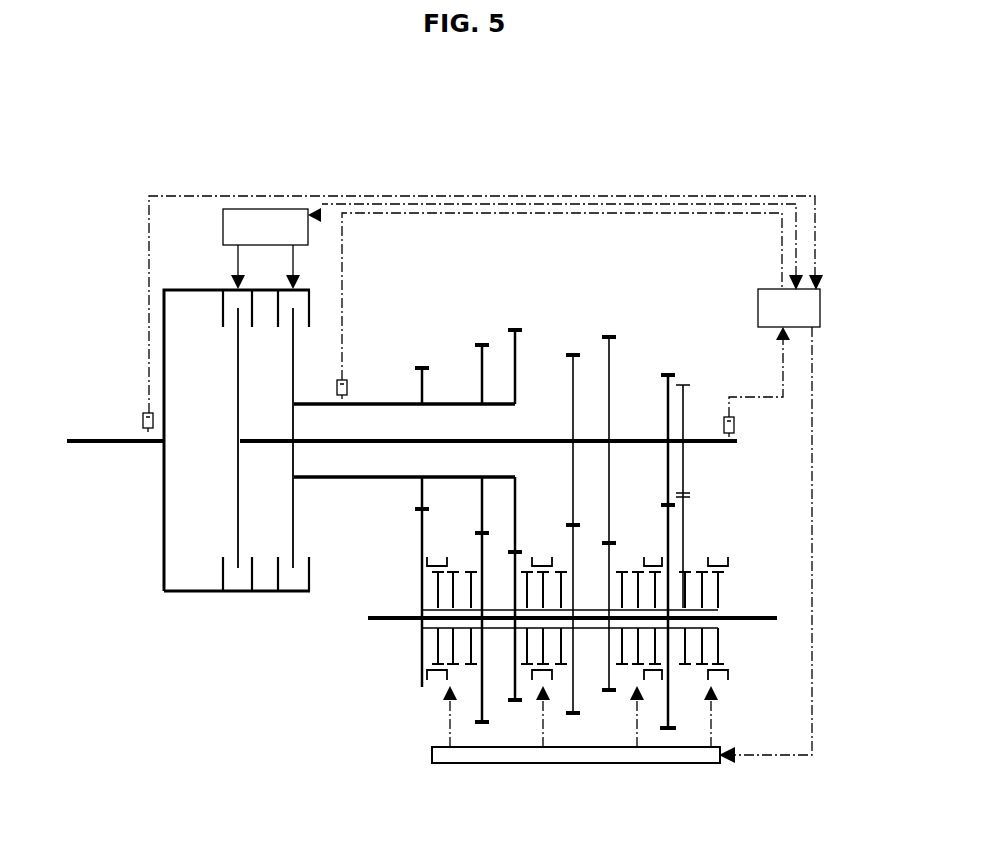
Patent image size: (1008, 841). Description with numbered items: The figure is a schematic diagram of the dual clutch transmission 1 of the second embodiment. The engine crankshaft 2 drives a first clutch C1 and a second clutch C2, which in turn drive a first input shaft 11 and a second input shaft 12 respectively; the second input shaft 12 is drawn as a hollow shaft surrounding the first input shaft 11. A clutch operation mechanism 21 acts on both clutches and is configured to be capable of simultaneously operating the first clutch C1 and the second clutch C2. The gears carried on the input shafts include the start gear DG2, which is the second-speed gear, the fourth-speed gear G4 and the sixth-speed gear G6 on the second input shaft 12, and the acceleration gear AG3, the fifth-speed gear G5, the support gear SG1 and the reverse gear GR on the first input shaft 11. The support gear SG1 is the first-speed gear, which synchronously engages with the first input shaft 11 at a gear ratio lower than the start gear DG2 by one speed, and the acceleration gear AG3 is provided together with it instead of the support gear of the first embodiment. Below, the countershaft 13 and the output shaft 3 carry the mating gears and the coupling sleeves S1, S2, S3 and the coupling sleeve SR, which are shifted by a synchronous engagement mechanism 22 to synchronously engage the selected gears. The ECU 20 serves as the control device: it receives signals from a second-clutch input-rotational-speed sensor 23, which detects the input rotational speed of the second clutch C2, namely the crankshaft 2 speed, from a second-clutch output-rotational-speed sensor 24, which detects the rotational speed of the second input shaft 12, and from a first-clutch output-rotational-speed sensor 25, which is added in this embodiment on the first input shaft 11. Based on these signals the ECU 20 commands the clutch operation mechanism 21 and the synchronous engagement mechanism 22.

The dual clutch transmission 1 is at (833, 352).
The crankshaft 2 is at (67, 445).
The output shaft 3 is at (778, 615).
The first input shaft 11 is at (712, 438).
The second input shaft 12 is at (364, 404).
The countershaft 13 is at (368, 618).
The ECU 20 is at (820, 300).
The clutch operation mechanism 21 is at (243, 226).
The synchronous engagement mechanism 22 is at (432, 752).
The second-clutch input-rotational-speed sensor 23 is at (143, 420).
The second-clutch output-rotational-speed sensor 24 is at (338, 392).
The first-clutch output-rotational-speed sensor 25 is at (735, 425).
The first clutch C1 is at (236, 364).
The second clutch C2 is at (291, 353).
The start gear DG2 is at (421, 367).
The fourth-speed gear G4 is at (481, 344).
The sixth-speed gear G6 is at (515, 329).
The acceleration gear AG3 is at (573, 354).
The fifth-speed gear G5 is at (609, 336).
The support gear SG1 is at (667, 374).
The reverse gear GR is at (683, 384).
The coupling sleeve S1 is at (642, 650).
The coupling sleeve S2 is at (452, 652).
The coupling sleeve S3 is at (548, 652).
The coupling sleeve SR is at (720, 660).